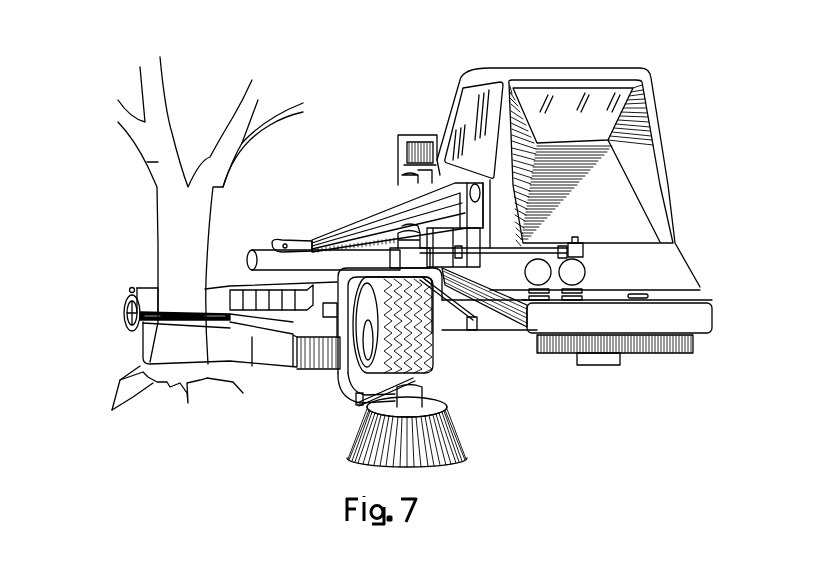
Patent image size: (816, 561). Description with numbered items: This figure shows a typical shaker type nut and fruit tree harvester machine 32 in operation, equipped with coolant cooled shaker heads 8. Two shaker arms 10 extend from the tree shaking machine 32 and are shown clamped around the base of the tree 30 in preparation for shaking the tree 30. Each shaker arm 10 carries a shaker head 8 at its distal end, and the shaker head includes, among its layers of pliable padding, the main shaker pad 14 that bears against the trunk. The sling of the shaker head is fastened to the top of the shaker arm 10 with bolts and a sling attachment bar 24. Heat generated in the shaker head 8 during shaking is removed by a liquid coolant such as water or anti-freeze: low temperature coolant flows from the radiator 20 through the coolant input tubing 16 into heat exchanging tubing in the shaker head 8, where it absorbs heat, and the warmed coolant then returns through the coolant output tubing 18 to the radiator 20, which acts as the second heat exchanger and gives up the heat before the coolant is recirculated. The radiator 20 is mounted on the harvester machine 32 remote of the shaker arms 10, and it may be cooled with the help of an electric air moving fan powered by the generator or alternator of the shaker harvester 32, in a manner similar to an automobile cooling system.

The shaker head 8 is at (122, 302).
The shaker arm 10 is at (148, 283).
The main shaker pad 14 is at (124, 331).
The coolant input tubing 16 is at (236, 290).
The coolant output tubing 18 is at (152, 282).
The radiator 20 is at (423, 137).
The sling attachment bar 24 is at (221, 290).
The tree 30 is at (157, 162).
The tree shaking machine 32 is at (573, 61).